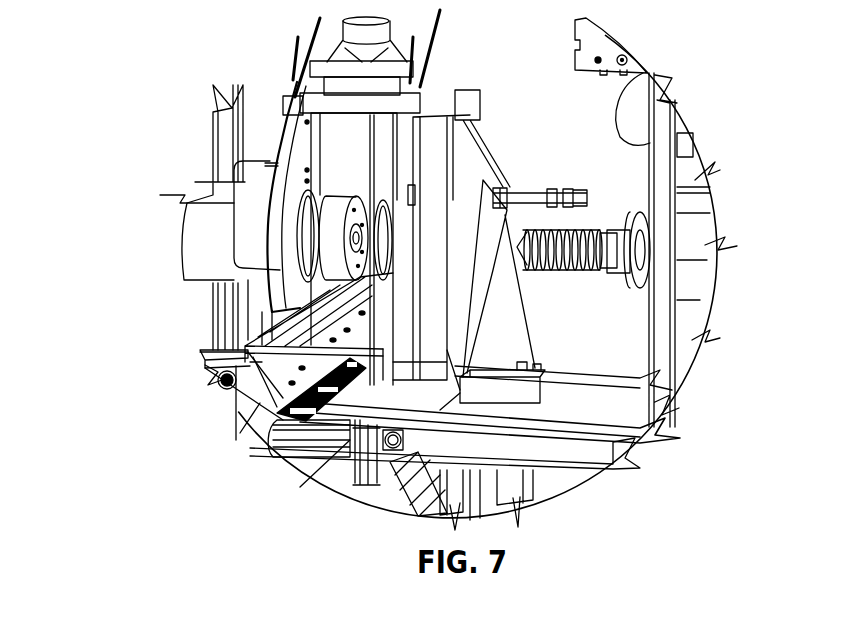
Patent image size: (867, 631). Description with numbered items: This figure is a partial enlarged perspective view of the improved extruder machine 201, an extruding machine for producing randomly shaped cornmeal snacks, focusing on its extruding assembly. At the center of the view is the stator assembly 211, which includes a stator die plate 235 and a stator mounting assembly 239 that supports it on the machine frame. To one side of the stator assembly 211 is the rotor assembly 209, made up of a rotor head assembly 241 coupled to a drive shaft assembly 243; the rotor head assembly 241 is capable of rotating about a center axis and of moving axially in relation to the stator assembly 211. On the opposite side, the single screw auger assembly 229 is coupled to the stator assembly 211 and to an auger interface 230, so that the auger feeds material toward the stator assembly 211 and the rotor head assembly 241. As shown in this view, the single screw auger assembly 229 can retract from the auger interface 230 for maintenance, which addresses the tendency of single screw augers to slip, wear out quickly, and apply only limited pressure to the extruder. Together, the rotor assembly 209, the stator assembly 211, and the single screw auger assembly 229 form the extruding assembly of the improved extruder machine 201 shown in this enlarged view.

The improved extruder machine 201 is at (201, 67).
The rotor assembly 209 is at (327, 184).
The stator assembly 211 is at (381, 188).
The single screw auger assembly 229 is at (603, 200).
The auger interface 230 is at (505, 287).
The stator die plate 235 is at (355, 295).
The stator mounting assembly 239 is at (250, 418).
The rotor head assembly 241 is at (353, 195).
The drive shaft assembly 243 is at (311, 246).